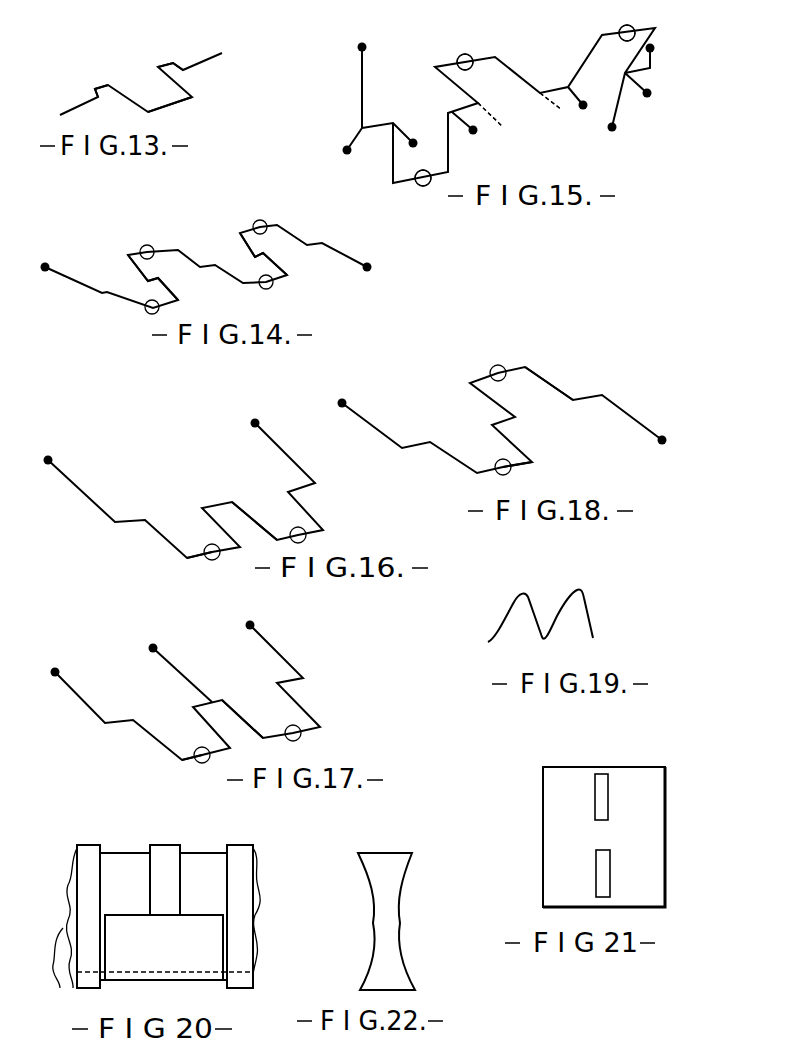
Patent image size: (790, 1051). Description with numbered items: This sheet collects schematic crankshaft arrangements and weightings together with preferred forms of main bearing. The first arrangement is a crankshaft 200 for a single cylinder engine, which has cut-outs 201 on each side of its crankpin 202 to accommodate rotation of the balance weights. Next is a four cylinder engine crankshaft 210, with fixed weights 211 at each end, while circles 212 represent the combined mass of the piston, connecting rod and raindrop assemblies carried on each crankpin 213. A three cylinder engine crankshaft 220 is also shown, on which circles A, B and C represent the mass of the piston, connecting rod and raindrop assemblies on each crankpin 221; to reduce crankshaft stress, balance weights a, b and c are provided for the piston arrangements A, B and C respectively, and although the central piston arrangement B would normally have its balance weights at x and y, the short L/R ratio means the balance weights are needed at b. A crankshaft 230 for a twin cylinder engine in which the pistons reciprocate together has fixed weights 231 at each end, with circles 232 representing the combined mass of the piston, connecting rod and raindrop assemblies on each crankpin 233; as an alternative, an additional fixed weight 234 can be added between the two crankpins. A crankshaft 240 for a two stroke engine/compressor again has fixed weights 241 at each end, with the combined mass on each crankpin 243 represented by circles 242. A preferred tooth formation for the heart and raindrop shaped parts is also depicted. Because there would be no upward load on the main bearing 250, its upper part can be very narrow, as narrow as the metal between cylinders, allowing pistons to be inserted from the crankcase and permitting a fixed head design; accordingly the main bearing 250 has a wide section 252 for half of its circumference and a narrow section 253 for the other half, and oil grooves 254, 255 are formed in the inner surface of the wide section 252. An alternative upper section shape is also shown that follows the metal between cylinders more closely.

In FIG. 13, the crankshaft 200 is at (205, 63).
In FIG. 13, the cut-outs 201 is at (100, 88).
In FIG. 13, the crankpin 202 is at (172, 108).
In FIG. 14, the crankshaft 210 is at (68, 288).
In FIG. 14, the fixed weights 211 is at (48, 265).
In FIG. 14, the circles 212 is at (146, 312).
In FIG. 14, the crankpins 213 is at (177, 302).
In FIG. 15, the crankshaft 220 is at (375, 127).
In FIG. 15, the crankpins 221 is at (477, 58).
In FIG. 16, the crankshaft 230 is at (82, 495).
In FIG. 17, the crankshaft 230 is at (92, 712).
In FIG. 16, the fixed weights 231 is at (50, 460).
In FIG. 17, the fixed weights 231 is at (57, 672).
In FIG. 16, the circles 232 is at (217, 560).
In FIG. 17, the circles 232 is at (202, 762).
In FIG. 16, the crankpins 233 is at (187, 558).
In FIG. 17, the crankpins 233 is at (183, 757).
In FIG. 17, the additional fixed weight 234 is at (157, 648).
In FIG. 18, the crankshaft 240 is at (617, 405).
In FIG. 18, the fixed weights 241 is at (345, 403).
In FIG. 18, the circles 242 is at (502, 365).
In FIG. 18, the crankpins 243 is at (520, 372).
In FIG. 20, the main bearing 250 is at (60, 975).
In FIG. 21, the wide section 252 is at (647, 800).
In FIG. 20, the wide section 252 is at (203, 943).
In FIG. 20, the narrow section 253 is at (170, 878).
In FIG. 21, the oil groove 254 is at (602, 790).
In FIG. 21, the oil groove 255 is at (603, 878).
In FIG. 15, the piston arrangement A is at (417, 186).
In FIG. 15, the central piston arrangement B is at (462, 56).
In FIG. 15, the piston arrangement C is at (622, 43).
In FIG. 15, the balance weights a is at (511, 38).
In FIG. 15, the balance weights b is at (538, 118).
In FIG. 15, the balance weights c is at (484, 150).
In FIG. 15, the balance weight position x is at (497, 121).
In FIG. 15, the balance weight position y is at (555, 113).